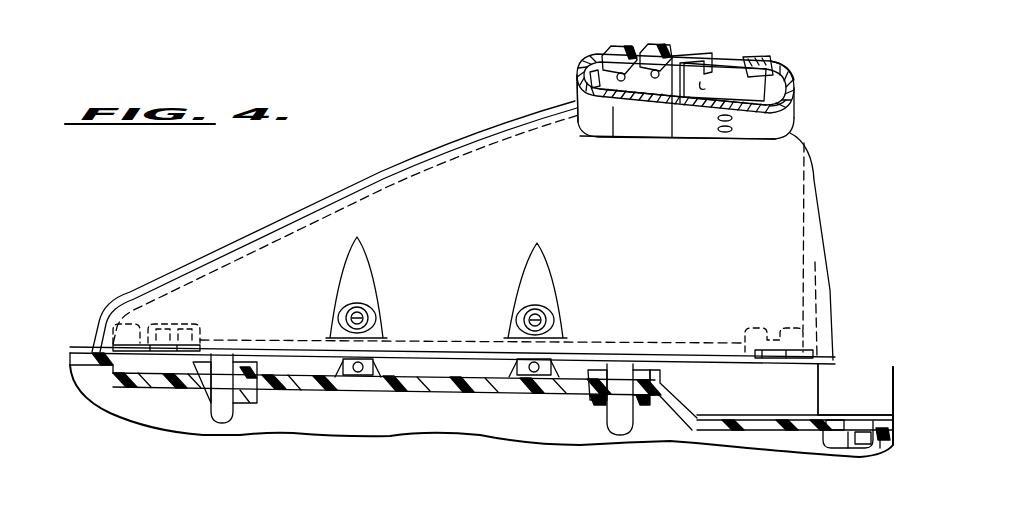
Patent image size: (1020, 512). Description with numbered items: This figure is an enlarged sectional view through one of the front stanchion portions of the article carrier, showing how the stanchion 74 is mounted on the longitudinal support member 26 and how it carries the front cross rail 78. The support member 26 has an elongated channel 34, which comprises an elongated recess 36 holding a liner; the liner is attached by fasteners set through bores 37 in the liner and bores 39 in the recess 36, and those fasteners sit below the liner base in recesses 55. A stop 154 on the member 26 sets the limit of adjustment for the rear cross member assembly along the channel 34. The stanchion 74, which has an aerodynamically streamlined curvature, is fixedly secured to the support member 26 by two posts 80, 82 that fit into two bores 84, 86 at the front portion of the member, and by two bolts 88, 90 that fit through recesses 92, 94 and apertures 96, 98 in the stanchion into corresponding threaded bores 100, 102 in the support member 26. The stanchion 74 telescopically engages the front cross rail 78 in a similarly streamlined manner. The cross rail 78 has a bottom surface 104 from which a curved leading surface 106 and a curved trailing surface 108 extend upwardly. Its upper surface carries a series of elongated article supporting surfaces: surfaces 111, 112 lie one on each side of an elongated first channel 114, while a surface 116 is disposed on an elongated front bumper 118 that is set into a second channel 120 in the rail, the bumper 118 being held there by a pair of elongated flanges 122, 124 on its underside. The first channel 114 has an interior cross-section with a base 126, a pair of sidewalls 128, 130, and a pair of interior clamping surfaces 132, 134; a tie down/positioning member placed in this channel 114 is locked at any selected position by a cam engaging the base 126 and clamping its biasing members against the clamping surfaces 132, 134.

The support member 26 is at (78, 328).
The elongated channel 34 is at (838, 368).
The elongated recess 36 is at (780, 415).
The bores in the liner 37 is at (845, 432).
The bores in the recess 39 is at (870, 450).
The recesses 55 is at (840, 413).
The stanchion 74 is at (536, 138).
The front cross rail 78 is at (812, 81).
The post 80 is at (220, 413).
The post 82 is at (621, 432).
The bore 84 is at (220, 356).
The bore 86 is at (606, 404).
The bolt 88 is at (377, 321).
The bolt 90 is at (555, 322).
The recess 92 is at (353, 262).
The recess 94 is at (530, 262).
The aperture 96 is at (342, 319).
The aperture 98 is at (517, 322).
The threaded bore 100 is at (352, 380).
The threaded bore 102 is at (528, 385).
The bottom surface 104 is at (702, 138).
The curved leading surface 106 is at (577, 78).
The curved trailing surface 108 is at (797, 90).
The article supporting surface 111 is at (766, 56).
The article supporting surface 112 is at (703, 57).
The first channel 114 is at (733, 75).
The article supporting surface 116 is at (621, 46).
The front bumper 118 is at (650, 50).
The second channel 120 is at (606, 84).
The flange 122 is at (615, 95).
The flange 124 is at (683, 109).
The base 126 is at (747, 108).
The sidewall 128 is at (672, 106).
The sidewall 130 is at (796, 104).
The interior clamping surface 132 is at (721, 91).
The interior clamping surface 134 is at (797, 74).
The stop 154 is at (855, 389).